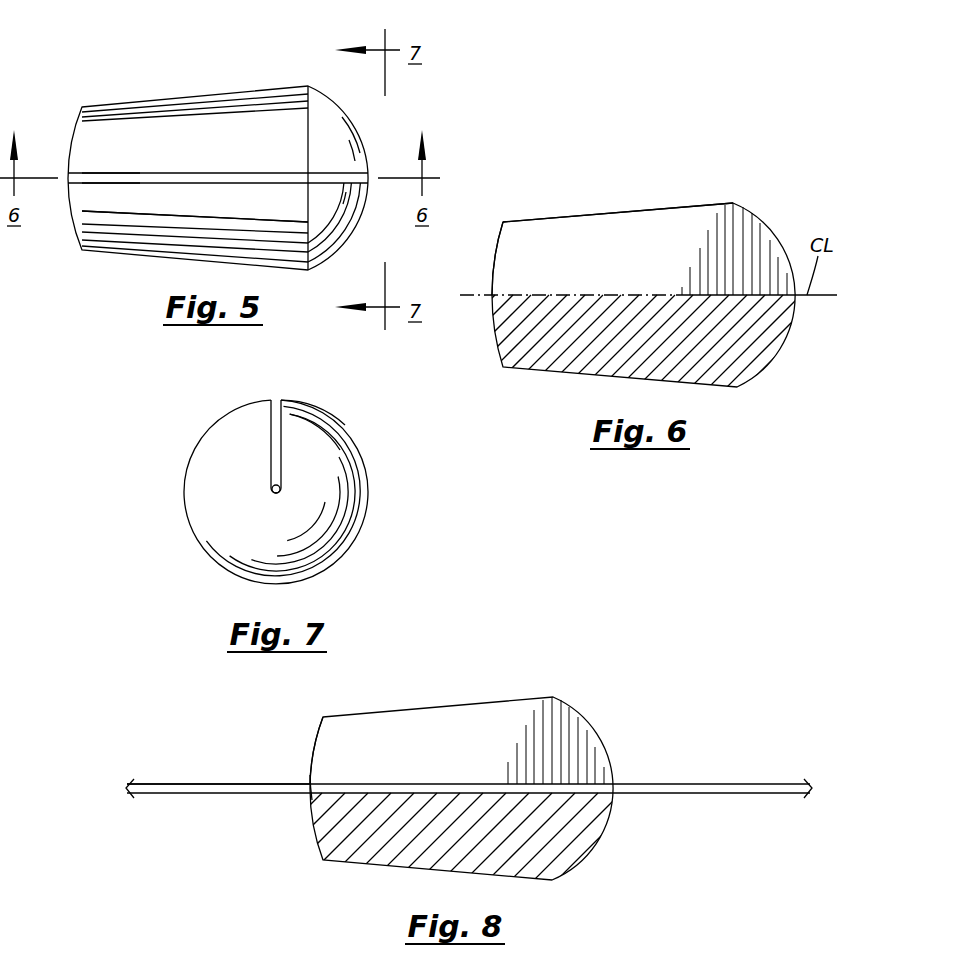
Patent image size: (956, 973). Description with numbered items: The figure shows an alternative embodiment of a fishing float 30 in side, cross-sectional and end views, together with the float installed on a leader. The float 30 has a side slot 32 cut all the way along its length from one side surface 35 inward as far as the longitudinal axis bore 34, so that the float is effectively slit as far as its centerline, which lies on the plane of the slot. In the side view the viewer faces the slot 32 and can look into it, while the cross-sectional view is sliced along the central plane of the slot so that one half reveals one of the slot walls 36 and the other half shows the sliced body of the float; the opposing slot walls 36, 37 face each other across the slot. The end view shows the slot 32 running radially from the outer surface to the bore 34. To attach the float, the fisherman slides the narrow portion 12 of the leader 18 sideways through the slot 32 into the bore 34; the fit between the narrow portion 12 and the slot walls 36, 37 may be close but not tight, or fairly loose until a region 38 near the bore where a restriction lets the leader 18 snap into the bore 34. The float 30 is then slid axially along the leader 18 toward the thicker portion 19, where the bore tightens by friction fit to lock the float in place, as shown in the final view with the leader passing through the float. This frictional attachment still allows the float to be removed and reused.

In FIG. 8, the narrow portion of the leader 12 is at (687, 788).
In FIG. 8, the leader 18 is at (294, 768).
In FIG. 8, the thicker portion of the leader 19 is at (218, 786).
In FIG. 5, the float 30 is at (175, 128).
In FIG. 6, the float 30 is at (722, 190).
In FIG. 7, the float 30 is at (362, 497).
In FIG. 8, the float 30 is at (591, 694).
In FIG. 5, the side slot 32 is at (213, 178).
In FIG. 7, the side slot 32 is at (275, 428).
In FIG. 7, the longitudinal axis bore 34 is at (272, 488).
In FIG. 5, the side surface 35 is at (219, 217).
In FIG. 6, the side surface 35 is at (620, 212).
In FIG. 7, the side surface 35 is at (303, 402).
In FIG. 5, the slot wall 36 is at (118, 169).
In FIG. 6, the slot wall 36 is at (576, 271).
In FIG. 8, the slot wall 36 is at (400, 761).
In FIG. 5, the slot wall 37 is at (100, 187).
In FIG. 7, the region near the bore 38 is at (283, 475).